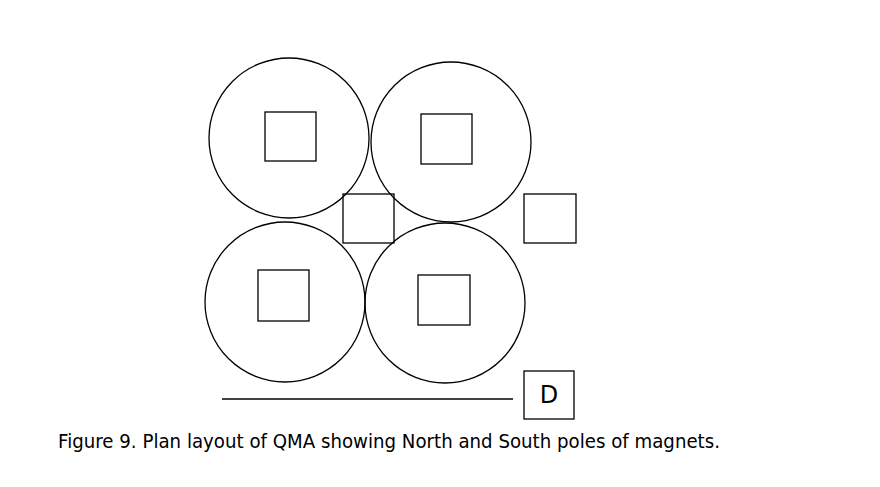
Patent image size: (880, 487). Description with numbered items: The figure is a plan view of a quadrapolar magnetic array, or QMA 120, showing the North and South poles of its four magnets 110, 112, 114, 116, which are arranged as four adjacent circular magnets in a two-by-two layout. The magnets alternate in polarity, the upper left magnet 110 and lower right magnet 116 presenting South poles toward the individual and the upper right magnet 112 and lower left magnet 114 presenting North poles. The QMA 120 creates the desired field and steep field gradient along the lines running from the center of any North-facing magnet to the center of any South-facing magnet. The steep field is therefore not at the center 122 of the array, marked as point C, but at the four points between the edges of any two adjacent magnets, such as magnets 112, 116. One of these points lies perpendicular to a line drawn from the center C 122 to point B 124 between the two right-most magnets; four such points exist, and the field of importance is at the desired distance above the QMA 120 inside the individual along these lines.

The magnet 110 is at (310, 73).
The magnet 112 is at (490, 90).
The magnet 114 is at (205, 303).
The magnet 116 is at (525, 320).
The quadrapolar magnetic array (QMA) 120 is at (192, 137).
The center of the QMA 122 is at (343, 220).
The point B 124 is at (576, 204).